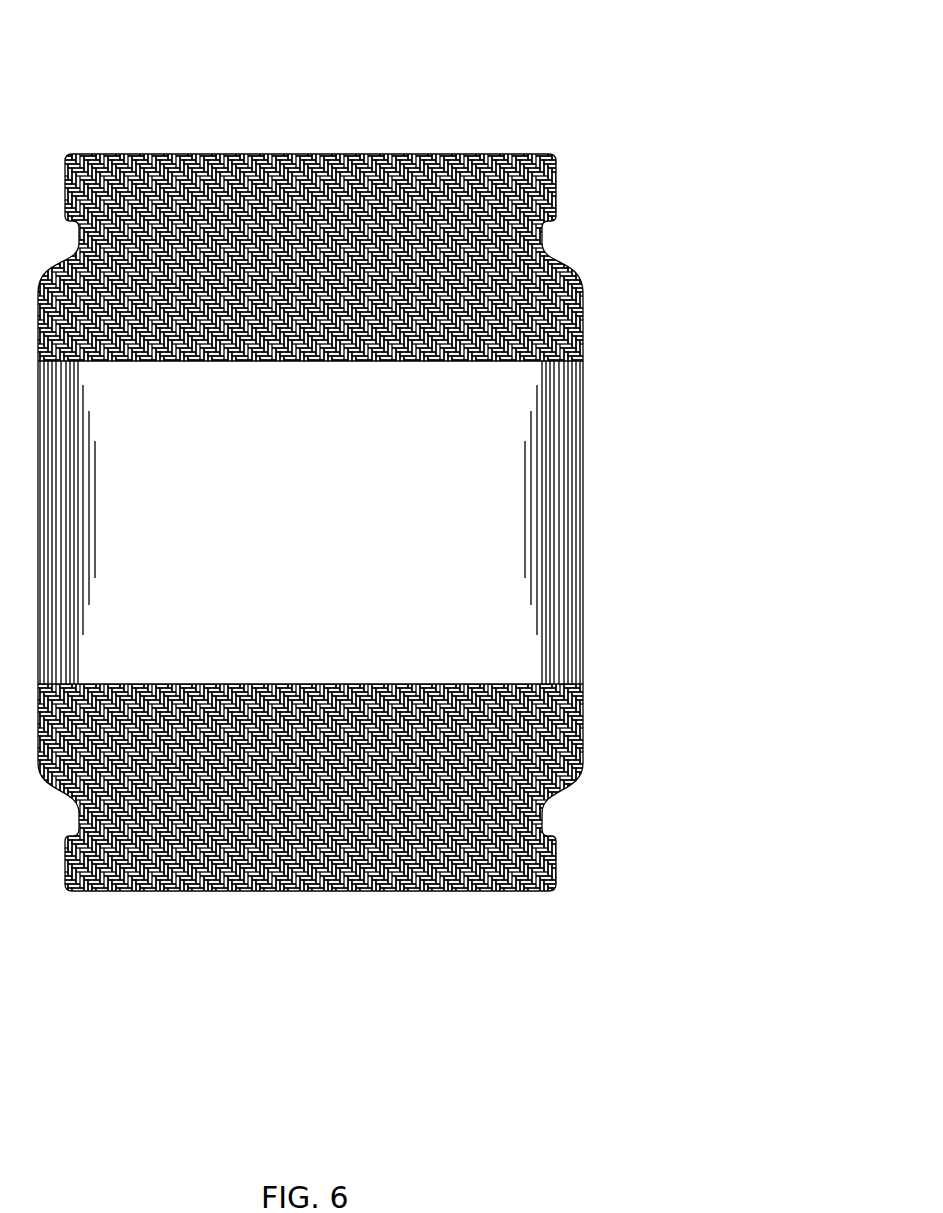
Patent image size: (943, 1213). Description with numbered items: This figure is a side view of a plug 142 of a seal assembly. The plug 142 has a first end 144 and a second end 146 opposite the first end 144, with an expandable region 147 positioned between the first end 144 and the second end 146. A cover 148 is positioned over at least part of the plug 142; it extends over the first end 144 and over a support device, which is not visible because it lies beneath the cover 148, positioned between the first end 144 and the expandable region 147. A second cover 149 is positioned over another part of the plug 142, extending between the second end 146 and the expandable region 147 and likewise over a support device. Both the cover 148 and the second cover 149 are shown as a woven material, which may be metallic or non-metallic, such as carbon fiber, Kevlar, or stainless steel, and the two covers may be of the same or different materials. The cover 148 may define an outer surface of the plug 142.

The plug 142 is at (487, 112).
The first end 144 is at (553, 128).
The second end 146 is at (451, 908).
The expandable region 147 is at (582, 354).
The cover 148 is at (522, 276).
The second cover 149 is at (518, 752).